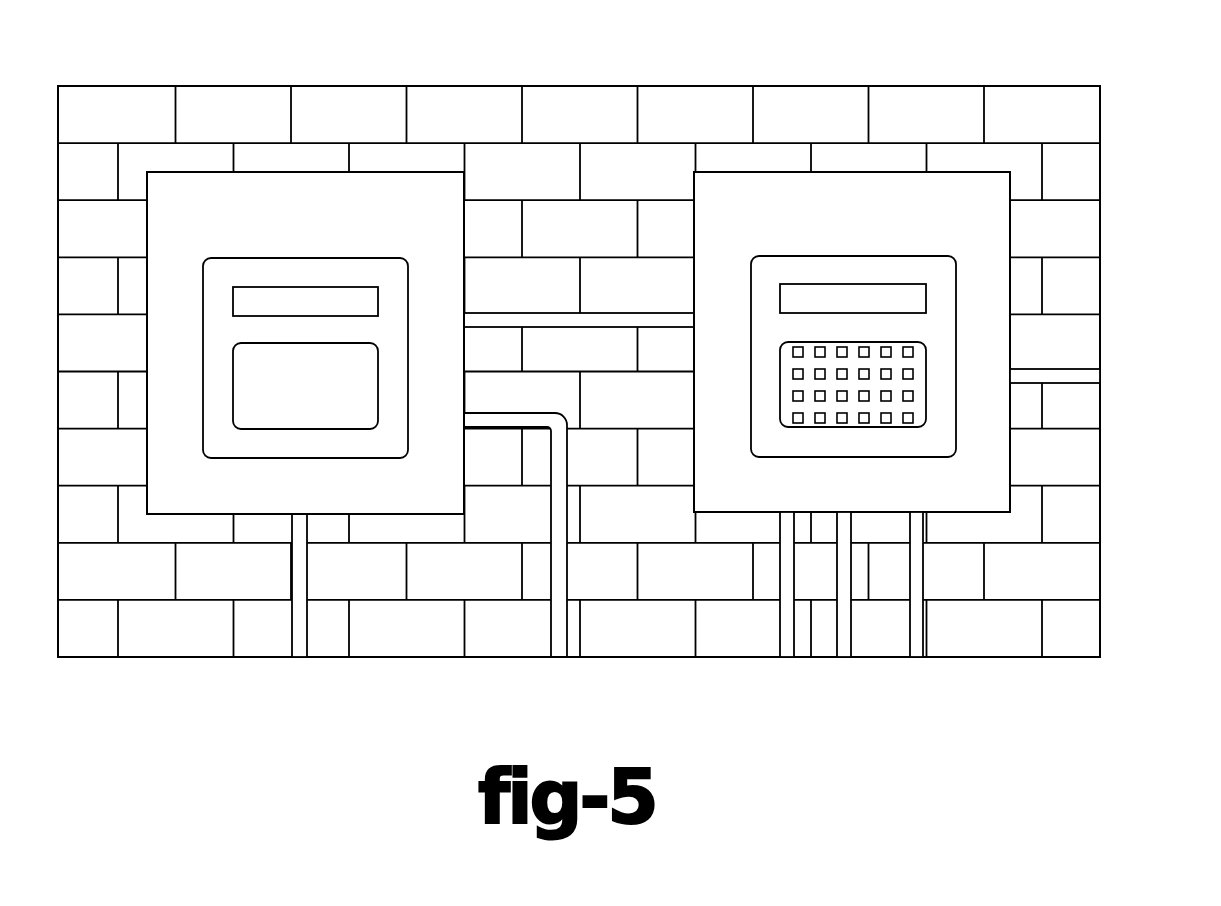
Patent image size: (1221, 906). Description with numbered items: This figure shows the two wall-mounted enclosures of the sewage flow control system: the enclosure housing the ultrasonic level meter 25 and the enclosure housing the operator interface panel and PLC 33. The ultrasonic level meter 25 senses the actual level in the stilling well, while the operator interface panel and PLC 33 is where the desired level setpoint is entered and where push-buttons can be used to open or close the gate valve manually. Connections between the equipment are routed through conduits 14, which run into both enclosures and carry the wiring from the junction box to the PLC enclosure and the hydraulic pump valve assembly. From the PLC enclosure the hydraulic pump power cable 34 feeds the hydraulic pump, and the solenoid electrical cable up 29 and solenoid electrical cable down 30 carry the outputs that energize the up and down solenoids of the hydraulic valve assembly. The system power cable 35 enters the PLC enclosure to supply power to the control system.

The conduits 14 is at (550, 312).
The ultrasonic level meter 25 is at (378, 200).
The operator interface panel and PLC 33 is at (927, 226).
The system power cable 35 is at (1069, 368).
The hydraulic pump power cable 34 is at (778, 657).
The solenoid electrical cable up 29 is at (838, 657).
The solenoid electrical cable down 30 is at (926, 657).